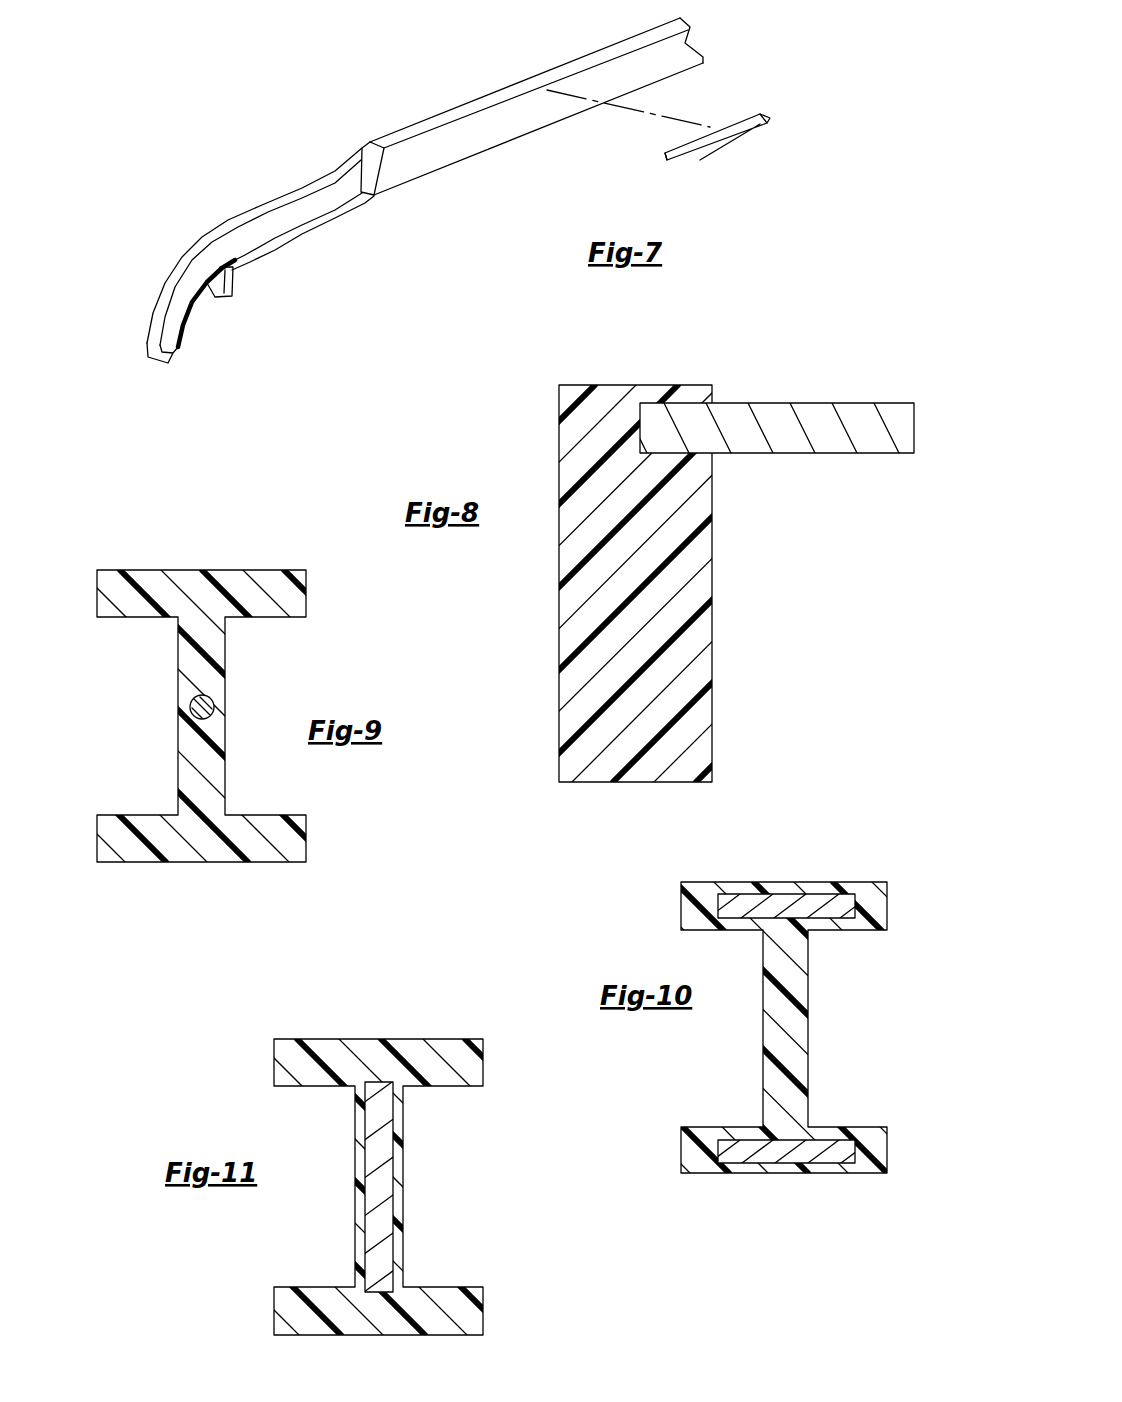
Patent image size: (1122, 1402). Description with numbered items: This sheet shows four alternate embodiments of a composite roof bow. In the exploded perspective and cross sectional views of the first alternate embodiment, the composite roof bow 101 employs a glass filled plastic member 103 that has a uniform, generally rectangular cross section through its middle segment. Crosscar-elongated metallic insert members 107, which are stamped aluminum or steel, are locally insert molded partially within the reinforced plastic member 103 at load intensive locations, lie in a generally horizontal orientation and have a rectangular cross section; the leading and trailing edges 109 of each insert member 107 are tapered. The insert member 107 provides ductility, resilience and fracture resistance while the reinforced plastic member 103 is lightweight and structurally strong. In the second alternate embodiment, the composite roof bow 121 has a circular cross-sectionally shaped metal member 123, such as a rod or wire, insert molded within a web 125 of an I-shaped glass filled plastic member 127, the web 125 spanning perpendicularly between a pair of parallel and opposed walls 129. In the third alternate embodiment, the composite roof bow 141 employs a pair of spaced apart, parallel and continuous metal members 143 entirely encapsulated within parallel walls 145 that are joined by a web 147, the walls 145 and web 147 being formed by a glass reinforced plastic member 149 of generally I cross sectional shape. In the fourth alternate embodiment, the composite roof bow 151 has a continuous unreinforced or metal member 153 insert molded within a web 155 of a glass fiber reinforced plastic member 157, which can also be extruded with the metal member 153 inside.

In FIG. 7, the composite roof bow 101 is at (257, 110).
In FIG. 8, the composite roof bow 101 is at (757, 559).
In FIG. 7, the glass filled plastic member 103 is at (413, 158).
In FIG. 8, the glass filled plastic member 103 is at (568, 474).
In FIG. 7, the insert member 107 is at (725, 136).
In FIG. 8, the insert member 107 is at (778, 406).
In FIG. 7, the leading and trailing edges 109 is at (673, 161).
In FIG. 9, the composite roof bow 121 is at (95, 549).
In FIG. 9, the metal member 123 is at (200, 696).
In FIG. 9, the web 125 is at (185, 740).
In FIG. 9, the glass filled plastic member 127 is at (193, 587).
In FIG. 9, the walls 129 is at (267, 567).
In FIG. 10, the composite roof bow 141 is at (780, 1188).
In FIG. 10, the metal members 143 is at (775, 903).
In FIG. 10, the walls 145 is at (880, 907).
In FIG. 10, the web 147 is at (800, 1027).
In FIG. 10, the glass reinforced plastic member 149 is at (773, 1088).
In FIG. 11, the composite roof bow 151 is at (378, 1032).
In FIG. 11, the metal member 153 is at (383, 1180).
In FIG. 11, the web 155 is at (362, 1152).
In FIG. 11, the glass fiber reinforced plastic member 157 is at (429, 1057).